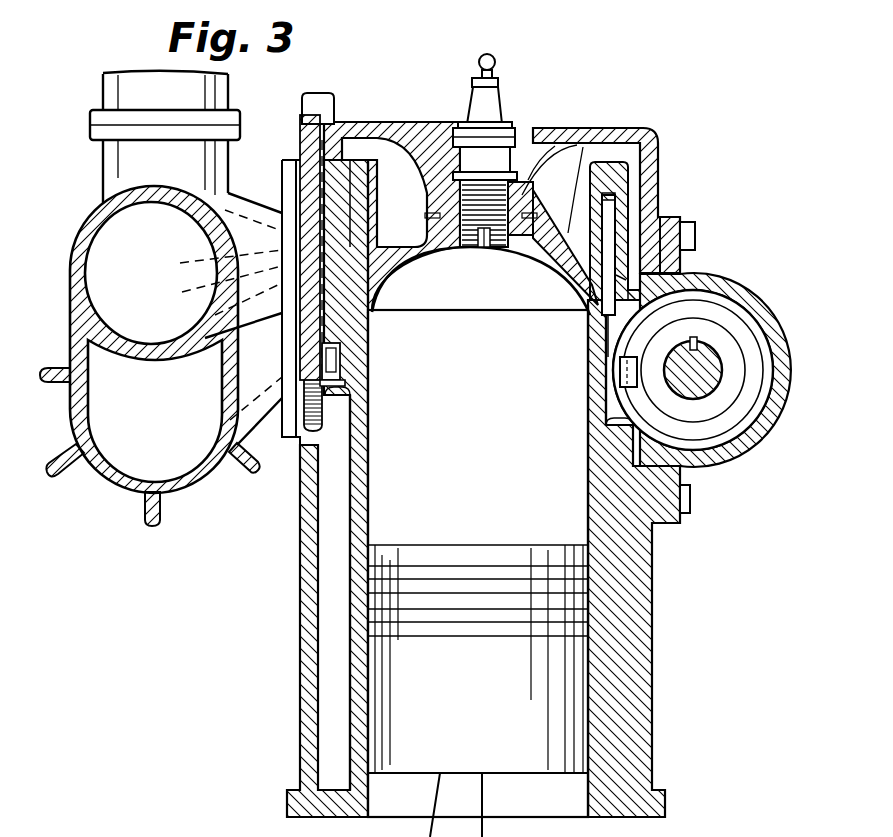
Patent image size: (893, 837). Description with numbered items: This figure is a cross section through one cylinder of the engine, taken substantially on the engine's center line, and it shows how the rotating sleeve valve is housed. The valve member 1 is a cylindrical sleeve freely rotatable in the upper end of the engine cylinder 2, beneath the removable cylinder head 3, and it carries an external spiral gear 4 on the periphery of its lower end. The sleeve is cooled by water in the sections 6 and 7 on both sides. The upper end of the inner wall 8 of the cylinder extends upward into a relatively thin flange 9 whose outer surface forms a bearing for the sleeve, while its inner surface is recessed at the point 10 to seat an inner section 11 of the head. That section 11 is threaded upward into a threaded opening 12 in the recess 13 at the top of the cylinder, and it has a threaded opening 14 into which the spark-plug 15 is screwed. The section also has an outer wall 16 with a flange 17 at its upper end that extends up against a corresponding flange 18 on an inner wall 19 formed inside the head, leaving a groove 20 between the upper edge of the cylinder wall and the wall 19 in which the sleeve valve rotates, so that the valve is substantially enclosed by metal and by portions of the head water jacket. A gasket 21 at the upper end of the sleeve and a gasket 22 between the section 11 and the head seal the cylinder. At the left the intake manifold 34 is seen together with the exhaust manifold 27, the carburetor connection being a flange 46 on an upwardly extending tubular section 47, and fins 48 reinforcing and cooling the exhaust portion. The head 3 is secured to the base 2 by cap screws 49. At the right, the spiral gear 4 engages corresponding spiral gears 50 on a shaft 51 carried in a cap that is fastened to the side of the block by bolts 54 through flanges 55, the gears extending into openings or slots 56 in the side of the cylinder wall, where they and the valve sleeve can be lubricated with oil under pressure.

The valve member 1 is at (377, 332).
The engine cylinder 2 is at (300, 602).
The removable cylinder head 3 is at (624, 130).
The external spiral gear 4 is at (630, 389).
The water section 6 is at (400, 217).
The water section 7 is at (648, 232).
The inner wall of the cylinder 8 is at (363, 480).
The flange 9 is at (583, 147).
The recess 10 is at (592, 300).
The inner section of the cylinder head 11 is at (562, 258).
The threaded opening 12 is at (528, 172).
The recess 13 is at (540, 153).
The threaded opening 14 is at (515, 236).
The spark-plug 15 is at (472, 94).
The outer wall 16 is at (368, 208).
The flange 17 is at (630, 190).
The flange 18 is at (628, 162).
The inner wall 19 is at (634, 194).
The groove 20 is at (620, 278).
The gasket 21 is at (633, 233).
The gasket 22 is at (551, 246).
The exhaust manifold 27 is at (137, 457).
The intake manifold 34 is at (108, 225).
The flange 46 is at (112, 131).
The tubular section 47 is at (118, 172).
The fins 48 is at (160, 522).
The cap screws 49 is at (335, 108).
The spiral gears 50 is at (707, 433).
The shaft 51 is at (722, 345).
The bolts 54 is at (696, 240).
The flanges 55 is at (672, 522).
The openings or slots 56 is at (620, 412).